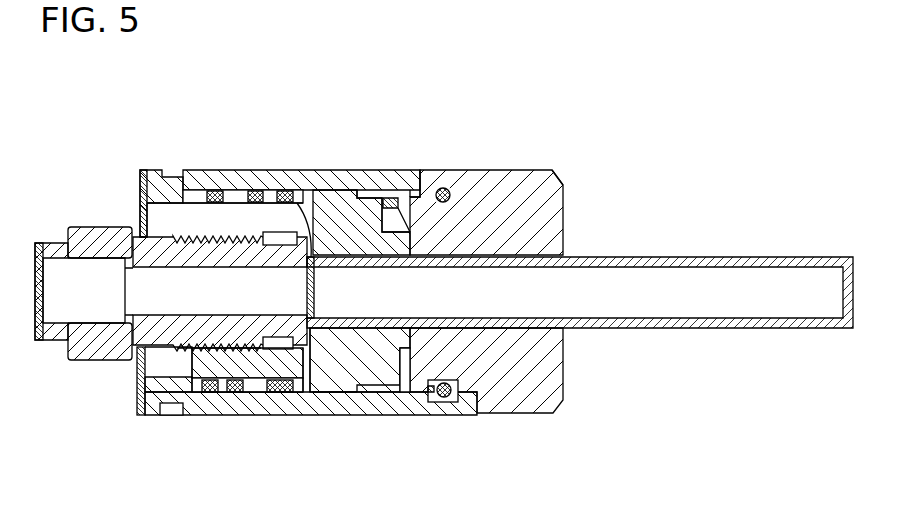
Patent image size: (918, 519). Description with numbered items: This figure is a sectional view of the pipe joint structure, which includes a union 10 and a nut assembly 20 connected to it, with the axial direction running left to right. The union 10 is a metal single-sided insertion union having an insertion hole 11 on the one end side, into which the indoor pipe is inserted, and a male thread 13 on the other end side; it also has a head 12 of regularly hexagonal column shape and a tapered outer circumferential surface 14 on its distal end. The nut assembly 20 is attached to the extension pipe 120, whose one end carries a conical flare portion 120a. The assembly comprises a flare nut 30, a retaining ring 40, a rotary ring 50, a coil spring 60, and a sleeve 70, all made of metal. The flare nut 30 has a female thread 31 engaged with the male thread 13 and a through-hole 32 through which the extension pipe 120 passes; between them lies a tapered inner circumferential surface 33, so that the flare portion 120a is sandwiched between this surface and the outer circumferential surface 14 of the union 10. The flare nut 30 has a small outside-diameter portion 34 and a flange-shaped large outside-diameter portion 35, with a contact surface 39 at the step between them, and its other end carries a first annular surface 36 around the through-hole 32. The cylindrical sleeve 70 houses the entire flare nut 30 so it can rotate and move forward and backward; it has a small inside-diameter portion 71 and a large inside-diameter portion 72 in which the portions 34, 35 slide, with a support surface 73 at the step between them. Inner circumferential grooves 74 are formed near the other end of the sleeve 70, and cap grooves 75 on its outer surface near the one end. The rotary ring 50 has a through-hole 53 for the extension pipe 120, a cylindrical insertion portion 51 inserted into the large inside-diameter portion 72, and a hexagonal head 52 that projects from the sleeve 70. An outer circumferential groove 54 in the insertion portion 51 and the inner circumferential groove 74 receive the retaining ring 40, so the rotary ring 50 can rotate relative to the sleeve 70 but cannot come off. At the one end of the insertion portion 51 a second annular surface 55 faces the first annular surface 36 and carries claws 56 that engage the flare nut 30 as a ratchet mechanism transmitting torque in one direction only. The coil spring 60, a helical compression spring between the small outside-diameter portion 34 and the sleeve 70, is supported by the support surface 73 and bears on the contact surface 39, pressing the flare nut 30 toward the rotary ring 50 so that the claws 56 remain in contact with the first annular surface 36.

The union 10 is at (122, 190).
The insertion hole 11 is at (35, 258).
The head 12 is at (92, 226).
The male thread 13 is at (194, 236).
The support surface 73 is at (212, 192).
The female thread 31 is at (232, 236).
The tapered outer circumferential surface 14 is at (280, 192).
The contact surface 39 is at (296, 200).
The flare portion 120a is at (311, 257).
The through-hole 32 is at (364, 238).
The first annular surface 36 is at (391, 204).
The claw 56 is at (398, 200).
The retaining ring 40 is at (446, 188).
The insertion portion 51 is at (467, 180).
The nut assembly 20 is at (482, 143).
The head 52 is at (503, 170).
The through-hole 53 is at (537, 252).
The extension pipe 120 is at (660, 257).
The cap groove 75 is at (167, 415).
The small inside-diameter portion 71 is at (187, 403).
The coil spring 60 is at (220, 393).
The small outside-diameter portion 34 is at (247, 368).
The large inside-diameter portion 72 is at (267, 415).
The tapered inner circumferential surface 33 is at (311, 335).
The large outside-diameter portion 35 is at (328, 392).
The sleeve 70 is at (358, 415).
The flare nut 30 is at (378, 375).
The second annular surface 55 is at (404, 385).
The inner circumferential groove 74 is at (430, 393).
The outer circumferential groove 54 is at (452, 394).
The rotary ring 50 is at (510, 393).